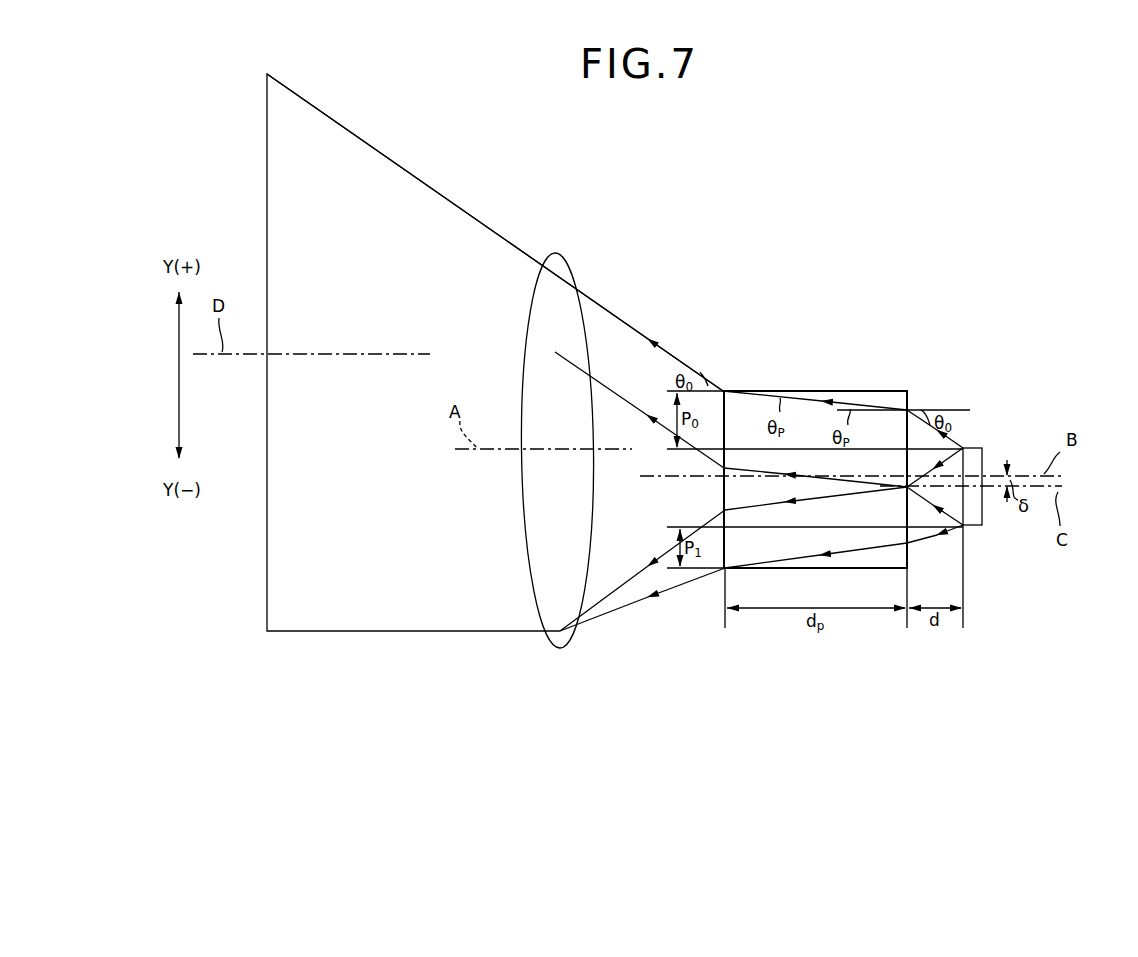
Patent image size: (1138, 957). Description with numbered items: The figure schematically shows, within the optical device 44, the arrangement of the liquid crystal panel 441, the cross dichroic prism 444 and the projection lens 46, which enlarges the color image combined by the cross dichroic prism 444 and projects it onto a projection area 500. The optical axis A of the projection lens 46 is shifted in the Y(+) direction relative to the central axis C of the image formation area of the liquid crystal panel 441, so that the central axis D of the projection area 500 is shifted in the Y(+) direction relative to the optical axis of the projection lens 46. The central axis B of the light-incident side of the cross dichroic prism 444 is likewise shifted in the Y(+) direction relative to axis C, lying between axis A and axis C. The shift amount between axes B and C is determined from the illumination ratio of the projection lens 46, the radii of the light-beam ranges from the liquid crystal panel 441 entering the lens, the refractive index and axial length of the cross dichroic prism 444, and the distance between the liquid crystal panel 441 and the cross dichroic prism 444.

The projection area 500 is at (267, 177).
The projection lens 46 is at (571, 266).
The optical device 44 is at (882, 409).
The cross dichroic prism 444 is at (876, 391).
The liquid crystal panel 441 is at (972, 448).